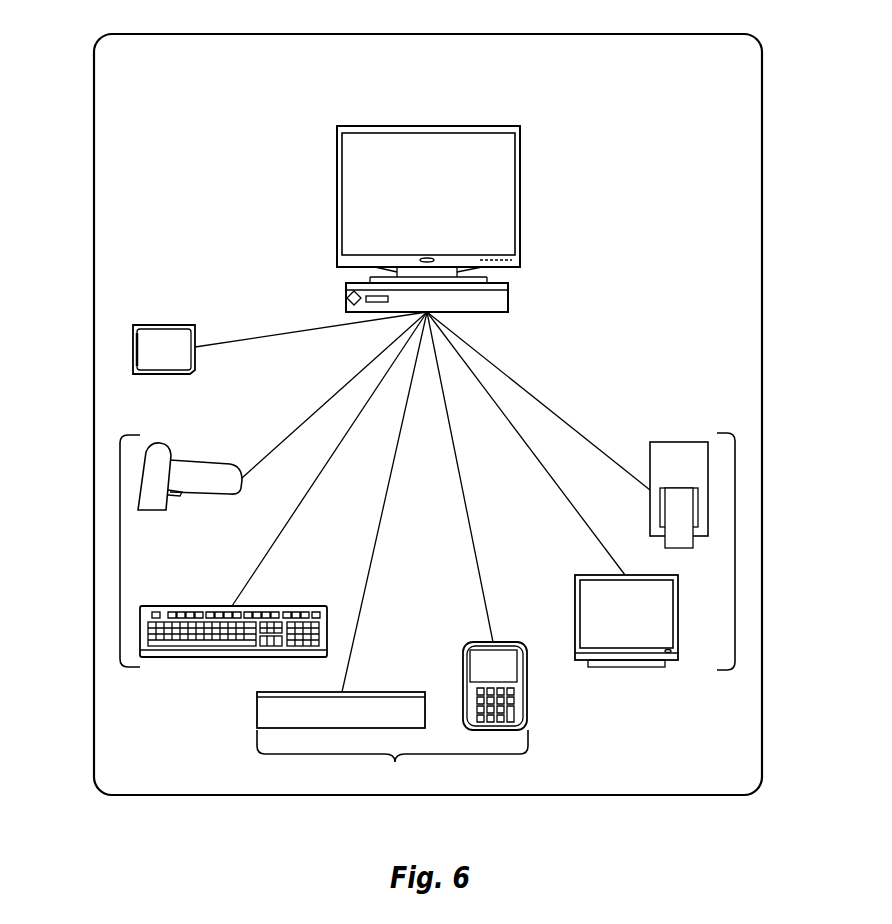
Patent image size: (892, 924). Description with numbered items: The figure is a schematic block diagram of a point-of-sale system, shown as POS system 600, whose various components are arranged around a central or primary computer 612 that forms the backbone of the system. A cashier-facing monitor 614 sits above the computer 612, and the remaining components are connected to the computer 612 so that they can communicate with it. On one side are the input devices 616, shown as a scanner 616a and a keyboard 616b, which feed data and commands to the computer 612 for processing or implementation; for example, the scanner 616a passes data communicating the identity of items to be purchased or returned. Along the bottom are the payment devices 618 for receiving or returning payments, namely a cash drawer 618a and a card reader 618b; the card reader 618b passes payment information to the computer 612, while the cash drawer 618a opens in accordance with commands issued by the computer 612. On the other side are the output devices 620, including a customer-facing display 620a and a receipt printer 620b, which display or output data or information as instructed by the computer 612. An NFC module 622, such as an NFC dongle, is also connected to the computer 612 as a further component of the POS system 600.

The POS system 600 is at (428, 414).
The computer 612 is at (534, 278).
The monitor 614 is at (326, 202).
The input devices 616 is at (120, 552).
The scanner 616a is at (157, 445).
The keyboard 616b is at (155, 606).
The payment devices 618 is at (395, 760).
The cash drawer 618a is at (257, 715).
The card reader 618b is at (527, 675).
The output devices 620 is at (735, 552).
The customer-facing display 620a is at (598, 575).
The receipt printer 620b is at (668, 442).
The NFC module 622 is at (158, 325).